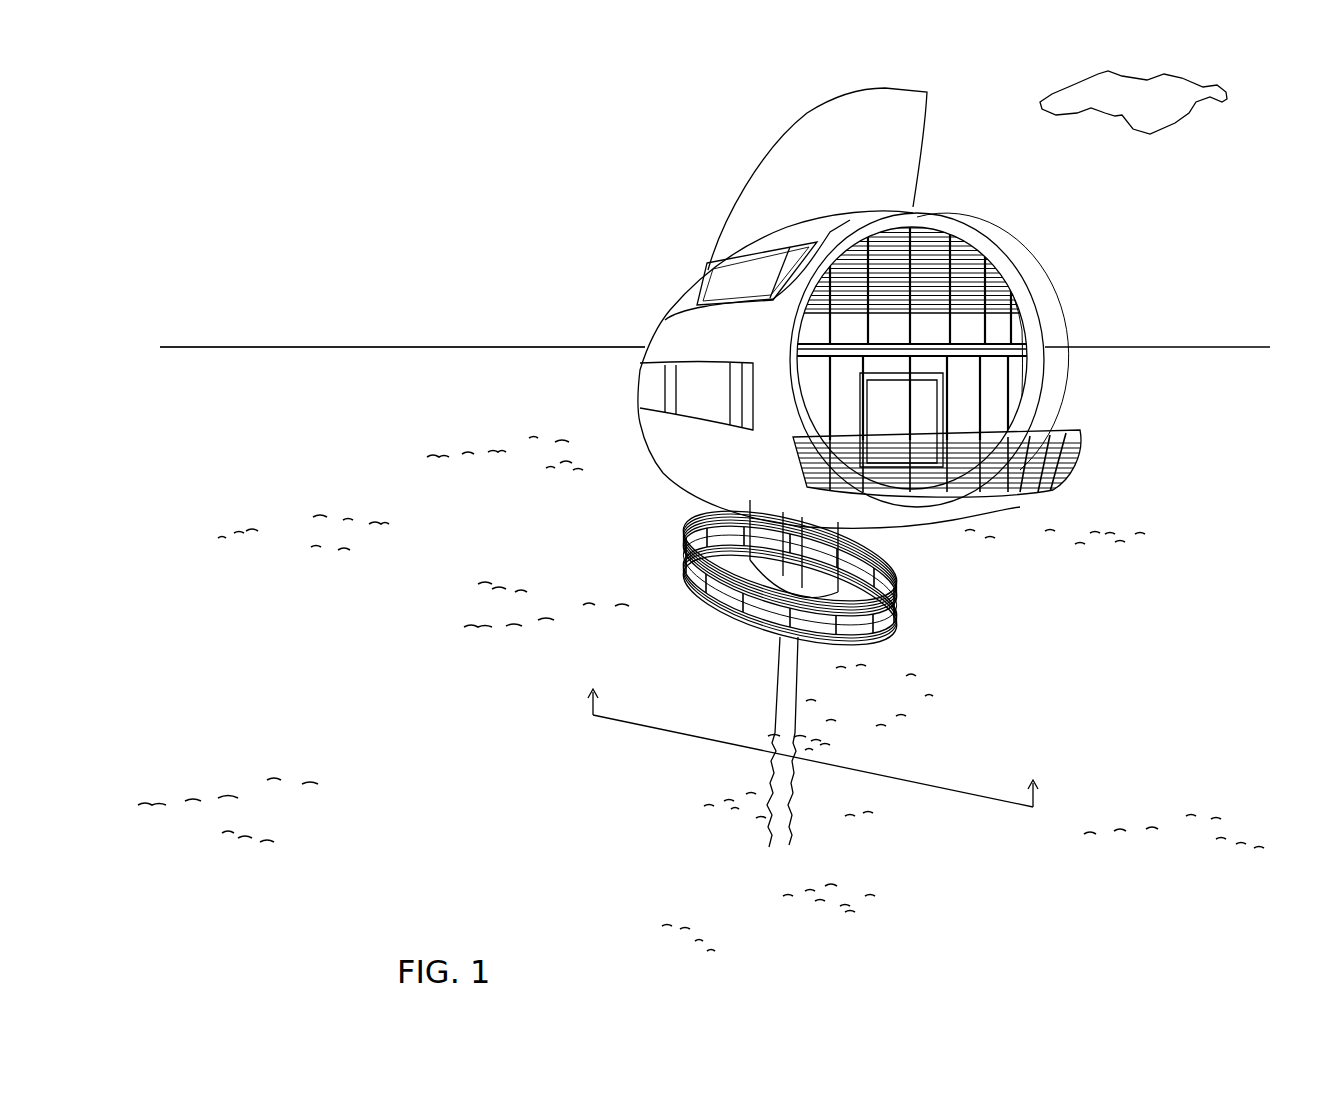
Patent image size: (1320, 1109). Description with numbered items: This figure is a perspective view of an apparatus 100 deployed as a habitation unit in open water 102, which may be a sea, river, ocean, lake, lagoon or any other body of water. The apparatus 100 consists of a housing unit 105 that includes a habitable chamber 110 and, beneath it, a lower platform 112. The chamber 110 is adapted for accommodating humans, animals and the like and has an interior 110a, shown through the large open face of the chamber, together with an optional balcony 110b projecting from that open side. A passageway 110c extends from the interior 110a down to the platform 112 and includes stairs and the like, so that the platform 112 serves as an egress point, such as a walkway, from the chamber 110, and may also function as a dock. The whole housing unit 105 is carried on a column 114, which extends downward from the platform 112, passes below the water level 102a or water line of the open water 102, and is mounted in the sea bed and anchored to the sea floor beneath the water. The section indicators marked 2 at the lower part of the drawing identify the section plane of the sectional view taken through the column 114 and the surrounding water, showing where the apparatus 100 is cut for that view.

The apparatus 100 is at (650, 290).
The open water 102 is at (256, 380).
The water level 102a is at (370, 388).
The housing unit 105 is at (905, 308).
The habitable chamber 110 is at (733, 351).
The interior 110a is at (1028, 327).
The balcony 110b is at (1063, 471).
The passageway 110c is at (783, 569).
The lower platform 112 is at (883, 608).
The column 114 is at (777, 715).
The section line 2- 2 is at (813, 736).